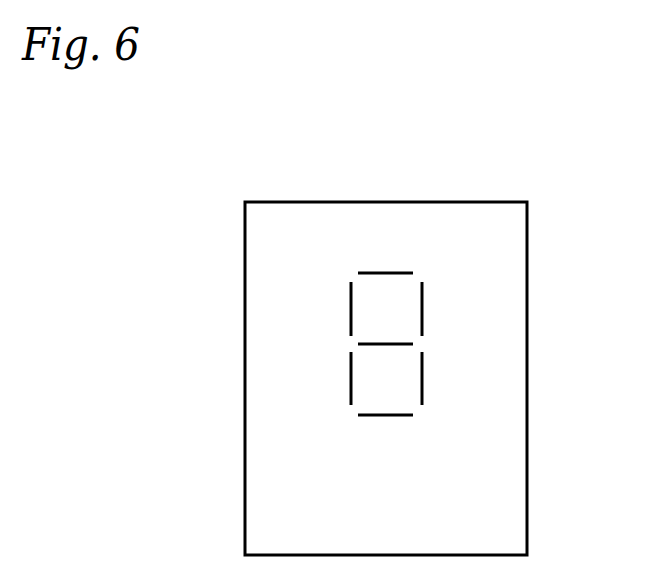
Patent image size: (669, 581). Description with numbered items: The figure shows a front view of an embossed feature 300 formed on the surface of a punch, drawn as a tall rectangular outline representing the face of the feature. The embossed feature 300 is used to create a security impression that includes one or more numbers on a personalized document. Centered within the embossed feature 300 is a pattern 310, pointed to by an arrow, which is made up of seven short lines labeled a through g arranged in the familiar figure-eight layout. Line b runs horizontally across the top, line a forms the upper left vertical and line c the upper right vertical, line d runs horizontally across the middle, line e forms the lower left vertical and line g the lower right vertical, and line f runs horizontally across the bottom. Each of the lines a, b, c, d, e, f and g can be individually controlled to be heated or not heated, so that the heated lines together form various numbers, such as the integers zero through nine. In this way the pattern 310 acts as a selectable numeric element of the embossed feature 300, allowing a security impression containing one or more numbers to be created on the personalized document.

The embossed feature 300 is at (492, 202).
The pattern 310 is at (463, 346).
The line a is at (349, 300).
The line b is at (378, 272).
The line c is at (423, 295).
The line d is at (375, 345).
The line e is at (350, 387).
The line f is at (378, 417).
The line g is at (443, 379).